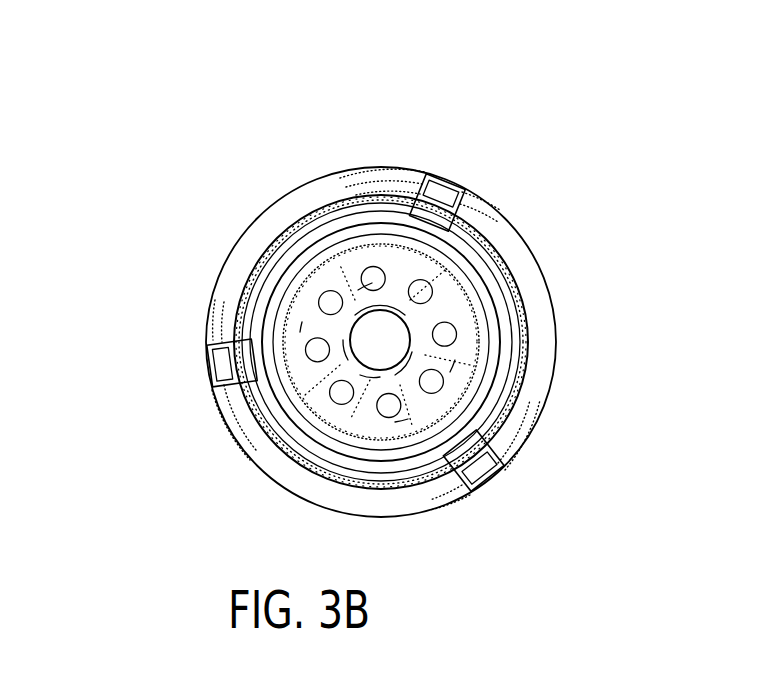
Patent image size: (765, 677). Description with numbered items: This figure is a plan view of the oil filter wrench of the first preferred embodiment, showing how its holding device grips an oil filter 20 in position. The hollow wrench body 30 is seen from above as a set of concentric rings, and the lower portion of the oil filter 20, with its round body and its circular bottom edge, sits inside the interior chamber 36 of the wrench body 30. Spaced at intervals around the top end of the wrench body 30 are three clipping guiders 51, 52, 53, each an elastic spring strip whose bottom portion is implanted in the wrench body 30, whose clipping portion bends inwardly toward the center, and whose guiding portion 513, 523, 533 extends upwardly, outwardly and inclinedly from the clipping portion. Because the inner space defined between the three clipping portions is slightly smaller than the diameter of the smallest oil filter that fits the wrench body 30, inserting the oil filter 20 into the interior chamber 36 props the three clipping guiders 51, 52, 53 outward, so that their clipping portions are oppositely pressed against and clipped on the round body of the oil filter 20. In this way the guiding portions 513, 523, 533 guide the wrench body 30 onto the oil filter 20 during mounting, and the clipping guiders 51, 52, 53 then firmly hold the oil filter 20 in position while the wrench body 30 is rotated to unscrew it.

The oil filter 20 is at (452, 352).
The wrench body 30 is at (487, 223).
The interior chamber 36 is at (392, 213).
The clipping guider 51 is at (227, 360).
The guiding portion 513 is at (245, 368).
The clipping guider 52 is at (473, 477).
The guiding portion 523 is at (483, 453).
The clipping guider 53 is at (435, 213).
The guiding portion 533 is at (458, 202).